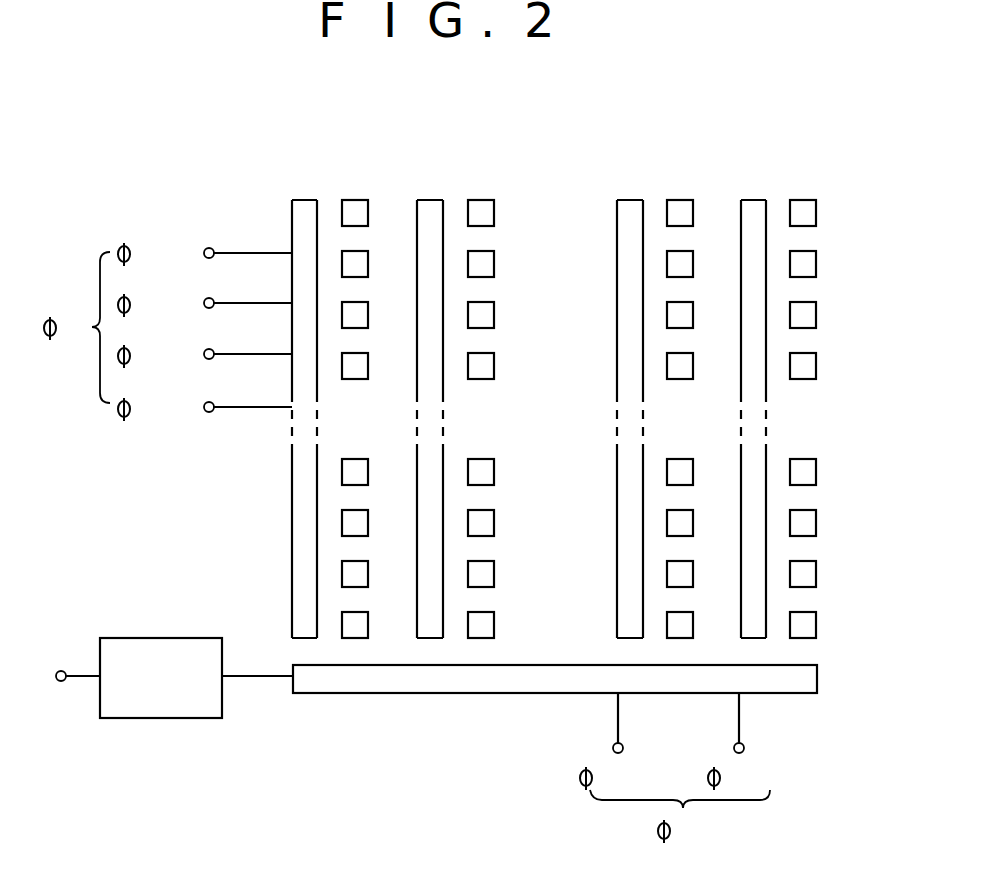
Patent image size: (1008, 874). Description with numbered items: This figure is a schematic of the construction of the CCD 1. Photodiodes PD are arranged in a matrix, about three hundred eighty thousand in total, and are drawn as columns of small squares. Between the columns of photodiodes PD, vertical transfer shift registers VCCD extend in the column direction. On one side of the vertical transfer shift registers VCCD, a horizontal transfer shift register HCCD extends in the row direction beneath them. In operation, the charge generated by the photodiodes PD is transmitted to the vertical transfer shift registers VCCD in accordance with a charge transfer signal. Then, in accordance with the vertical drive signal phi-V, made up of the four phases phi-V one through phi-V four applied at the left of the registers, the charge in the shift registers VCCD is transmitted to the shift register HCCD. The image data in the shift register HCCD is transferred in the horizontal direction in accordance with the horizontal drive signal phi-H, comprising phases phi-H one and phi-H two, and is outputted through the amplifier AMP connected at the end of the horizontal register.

The CCD 1 is at (653, 121).
The vertical transfer shift register VCCD is at (427, 210).
The photodiode PD is at (490, 317).
The horizontal transfer shift register HCCD is at (397, 683).
The amplifier AMP is at (174, 678).